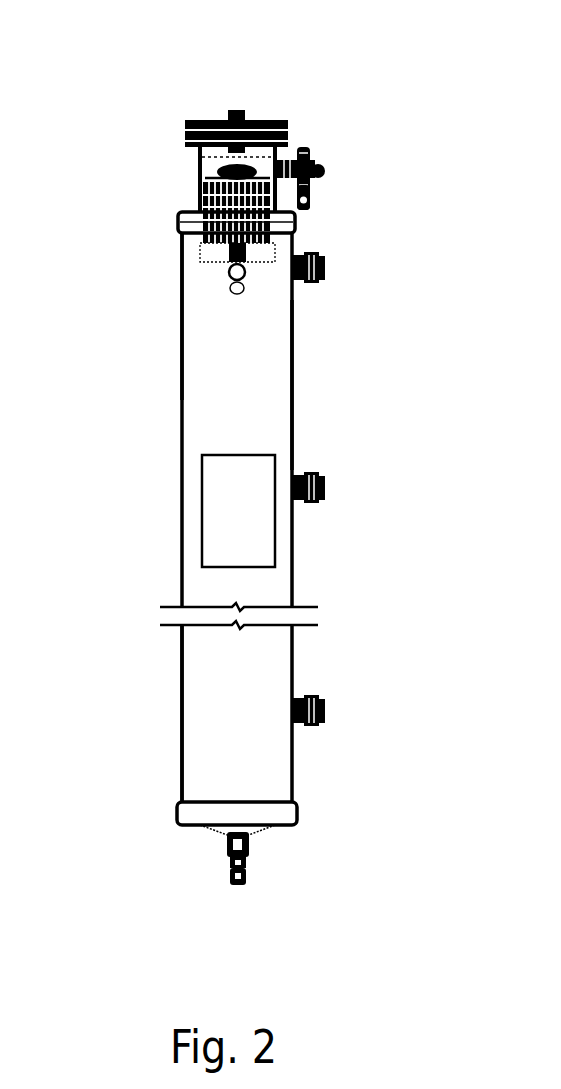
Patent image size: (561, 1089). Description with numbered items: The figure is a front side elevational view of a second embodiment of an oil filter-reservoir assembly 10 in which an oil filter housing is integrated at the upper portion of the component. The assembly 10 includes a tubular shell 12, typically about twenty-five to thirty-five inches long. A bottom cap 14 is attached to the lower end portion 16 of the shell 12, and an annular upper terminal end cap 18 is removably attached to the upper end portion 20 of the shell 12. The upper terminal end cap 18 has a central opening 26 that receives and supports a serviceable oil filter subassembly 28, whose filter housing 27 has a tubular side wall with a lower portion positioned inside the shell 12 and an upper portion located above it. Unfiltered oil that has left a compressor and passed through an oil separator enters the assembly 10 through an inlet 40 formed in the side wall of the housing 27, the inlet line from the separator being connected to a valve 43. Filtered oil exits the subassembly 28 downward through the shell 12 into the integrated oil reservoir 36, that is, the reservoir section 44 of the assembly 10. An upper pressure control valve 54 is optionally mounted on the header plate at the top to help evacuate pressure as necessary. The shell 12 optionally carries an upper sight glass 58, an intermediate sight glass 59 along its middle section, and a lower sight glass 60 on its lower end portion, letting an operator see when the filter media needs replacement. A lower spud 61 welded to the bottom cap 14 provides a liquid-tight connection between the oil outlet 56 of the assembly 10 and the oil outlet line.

The oil filter-reservoir assembly 10 is at (152, 175).
The shell 12 is at (208, 405).
The bottom cap 14 is at (213, 832).
The lower end portion 16 is at (203, 743).
The annular upper terminal end cap 18 is at (277, 213).
The upper end portion 20 is at (203, 302).
The central opening 26 is at (204, 207).
The filter housing 27 is at (277, 193).
The oil filter subassembly 28 is at (198, 157).
The integrated oil reservoir 36 is at (298, 357).
The inlet 40 is at (285, 158).
The valve 43 is at (312, 167).
The reservoir section 44 is at (283, 417).
The upper pressure control valve 54 is at (234, 110).
The oil outlet 56 is at (248, 845).
The upper sight glass 58 is at (322, 277).
The intermediate sight glass 59 is at (327, 493).
The lower sight glass 60 is at (327, 707).
The lower spud 61 is at (245, 883).